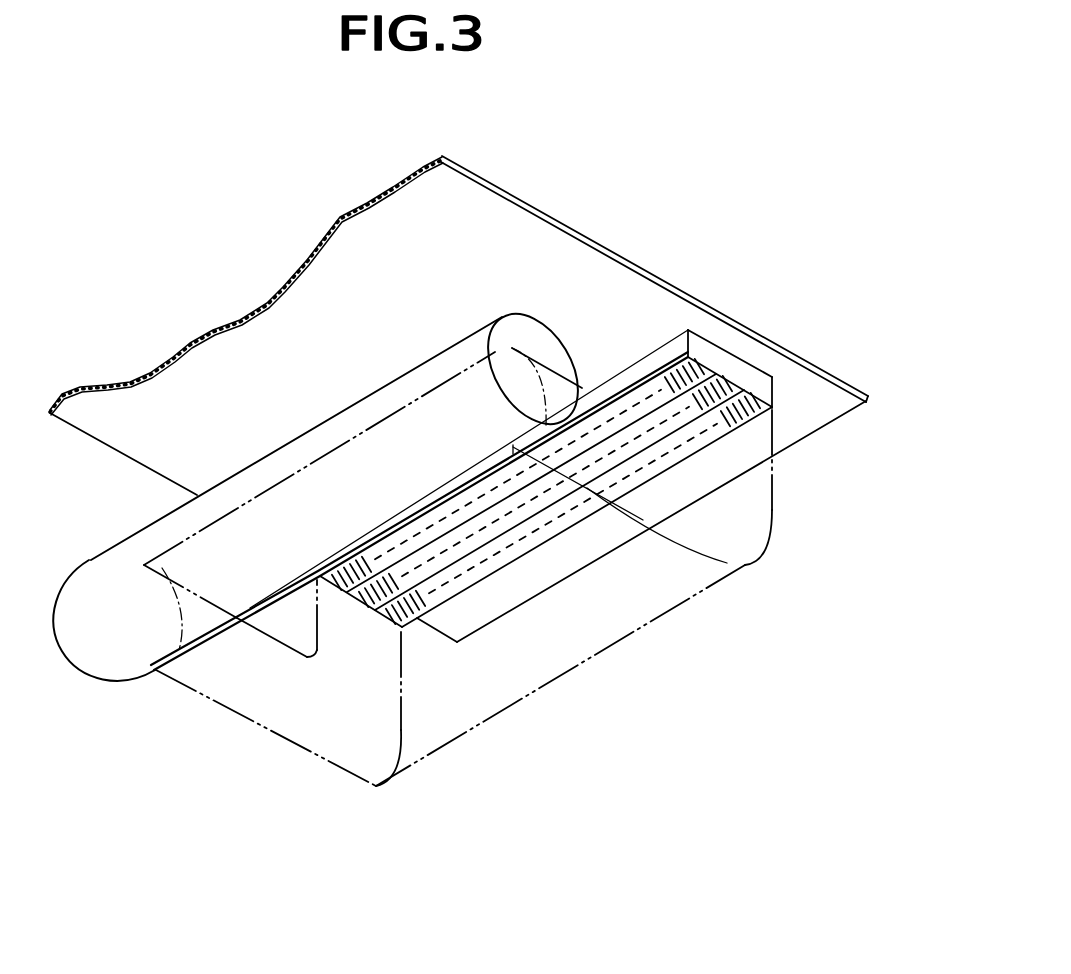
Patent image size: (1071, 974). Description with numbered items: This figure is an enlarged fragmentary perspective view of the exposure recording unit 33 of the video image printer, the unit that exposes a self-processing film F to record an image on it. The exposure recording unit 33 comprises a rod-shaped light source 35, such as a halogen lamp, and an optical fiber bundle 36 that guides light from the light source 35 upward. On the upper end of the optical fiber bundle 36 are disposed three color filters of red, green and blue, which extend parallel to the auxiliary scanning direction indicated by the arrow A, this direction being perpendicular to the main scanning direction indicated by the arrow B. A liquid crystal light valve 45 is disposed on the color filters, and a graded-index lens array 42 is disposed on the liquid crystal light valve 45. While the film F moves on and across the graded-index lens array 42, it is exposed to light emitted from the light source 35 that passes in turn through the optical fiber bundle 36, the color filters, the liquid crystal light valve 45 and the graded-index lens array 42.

The self-processing film F is at (572, 228).
The exposure recording unit 33 is at (810, 564).
The rod-shaped light source 35 is at (92, 560).
The optical fiber bundle 36 is at (428, 747).
The graded-index lens array 42 is at (753, 380).
The liquid crystal light valve 45 is at (707, 363).
The auxiliary scanning direction A is at (920, 398).
The main scanning direction B is at (466, 300).